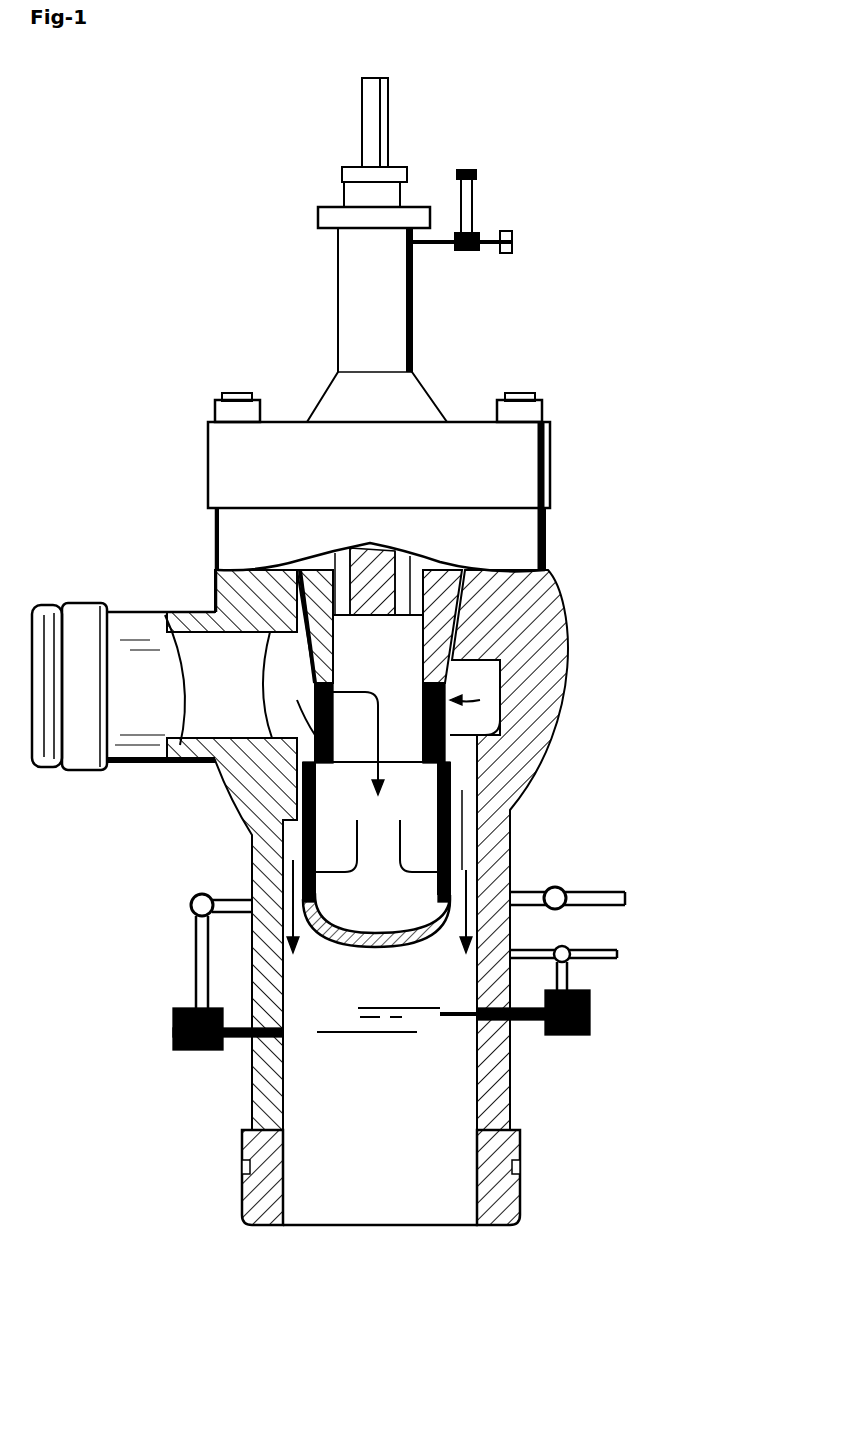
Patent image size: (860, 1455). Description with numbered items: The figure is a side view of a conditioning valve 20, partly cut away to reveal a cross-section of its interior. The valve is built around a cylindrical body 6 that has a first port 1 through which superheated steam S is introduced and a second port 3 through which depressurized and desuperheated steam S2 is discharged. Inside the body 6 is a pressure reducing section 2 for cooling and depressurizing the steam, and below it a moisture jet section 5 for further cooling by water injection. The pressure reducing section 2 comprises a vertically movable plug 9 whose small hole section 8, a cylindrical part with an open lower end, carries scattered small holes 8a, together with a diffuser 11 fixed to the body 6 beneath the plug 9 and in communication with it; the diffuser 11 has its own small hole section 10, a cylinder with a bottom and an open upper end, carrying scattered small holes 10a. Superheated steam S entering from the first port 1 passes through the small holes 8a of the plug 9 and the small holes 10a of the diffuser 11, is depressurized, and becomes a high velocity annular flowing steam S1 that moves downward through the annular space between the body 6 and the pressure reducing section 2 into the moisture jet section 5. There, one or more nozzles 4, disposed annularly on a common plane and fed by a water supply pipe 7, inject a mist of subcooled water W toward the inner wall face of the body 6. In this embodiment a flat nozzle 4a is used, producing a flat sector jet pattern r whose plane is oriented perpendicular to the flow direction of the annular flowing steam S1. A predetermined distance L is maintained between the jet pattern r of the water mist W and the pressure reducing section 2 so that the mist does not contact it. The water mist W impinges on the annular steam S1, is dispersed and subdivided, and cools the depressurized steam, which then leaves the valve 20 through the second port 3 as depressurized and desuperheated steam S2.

The conditioning valve 20 is at (572, 518).
The first port 1 is at (165, 614).
The cylindrical body 6 is at (567, 692).
The small hole section 8 is at (285, 668).
The small holes 8a is at (313, 710).
The vertically movable plug 9 is at (462, 676).
The small hole section 10 is at (296, 843).
The small holes 10a is at (252, 860).
The pressure reducing section 2 is at (364, 957).
The diffuser 11 is at (480, 840).
The second port 3 is at (432, 1226).
The moisture jet section 5 is at (338, 1192).
The water supply pipe 7 is at (556, 888).
The nozzles 4 is at (165, 1040).
The flat nozzle 4a is at (228, 1046).
The superheated steam S is at (278, 695).
The annular flowing steam S1 is at (250, 935).
The depressurized and desuperheated steam S2 is at (385, 1200).
The subcooled water mist W is at (313, 1036).
The predetermined distance L is at (383, 955).
The jet pattern r is at (337, 1031).